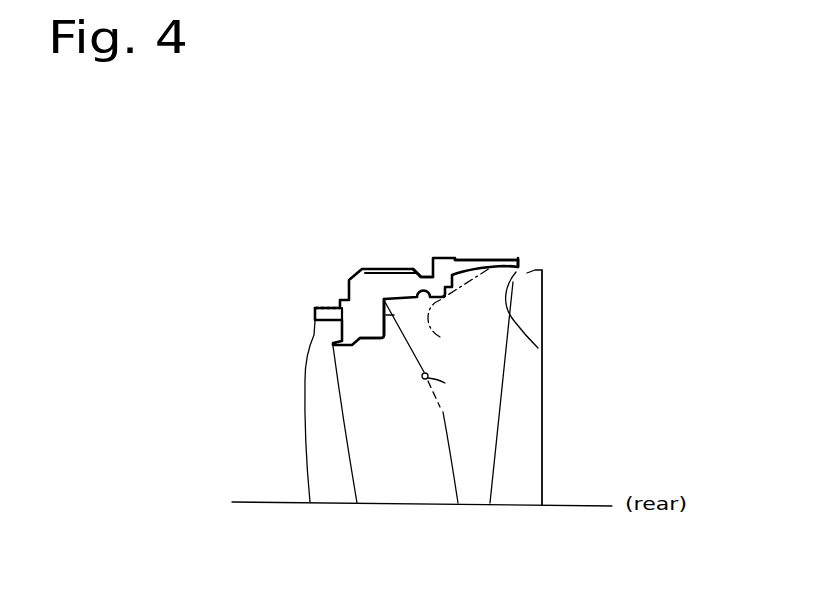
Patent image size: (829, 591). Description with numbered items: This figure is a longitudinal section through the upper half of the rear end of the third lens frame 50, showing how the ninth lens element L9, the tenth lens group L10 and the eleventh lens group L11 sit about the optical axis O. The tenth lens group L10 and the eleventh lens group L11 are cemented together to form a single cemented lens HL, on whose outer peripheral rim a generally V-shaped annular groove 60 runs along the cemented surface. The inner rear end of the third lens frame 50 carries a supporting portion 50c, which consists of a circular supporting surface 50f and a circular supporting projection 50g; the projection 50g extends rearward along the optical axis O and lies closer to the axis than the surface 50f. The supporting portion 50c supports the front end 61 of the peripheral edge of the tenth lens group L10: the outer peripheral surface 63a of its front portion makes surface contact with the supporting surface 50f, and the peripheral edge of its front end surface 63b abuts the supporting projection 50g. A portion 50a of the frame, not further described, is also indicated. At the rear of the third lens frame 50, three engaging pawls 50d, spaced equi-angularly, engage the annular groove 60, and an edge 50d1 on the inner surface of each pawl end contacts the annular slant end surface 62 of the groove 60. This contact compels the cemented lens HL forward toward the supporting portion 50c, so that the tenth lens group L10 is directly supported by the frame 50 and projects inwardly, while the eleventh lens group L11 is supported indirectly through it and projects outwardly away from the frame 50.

The third lens frame 50 is at (352, 279).
The flange portion 50a is at (381, 268).
The supporting portion 50c is at (372, 316).
The engaging pawls 50d is at (485, 258).
The projection (edge) of engaging pawl 50d1 is at (516, 278).
The circular supporting surface 50f is at (402, 300).
The circular supporting projection 50g is at (388, 320).
The annular groove 60 is at (510, 276).
The front end of peripheral edge of tenth lens group 61 is at (385, 340).
The annular slant end surface 62 is at (548, 350).
The outer peripheral surface 63a is at (459, 310).
The front end surface 63b is at (445, 383).
The cemented lens HL is at (542, 316).
The ninth lens element L9 is at (327, 433).
The tenth lens group L10 is at (467, 455).
The eleventh lens group L11 is at (545, 472).
The optical axis O is at (318, 503).